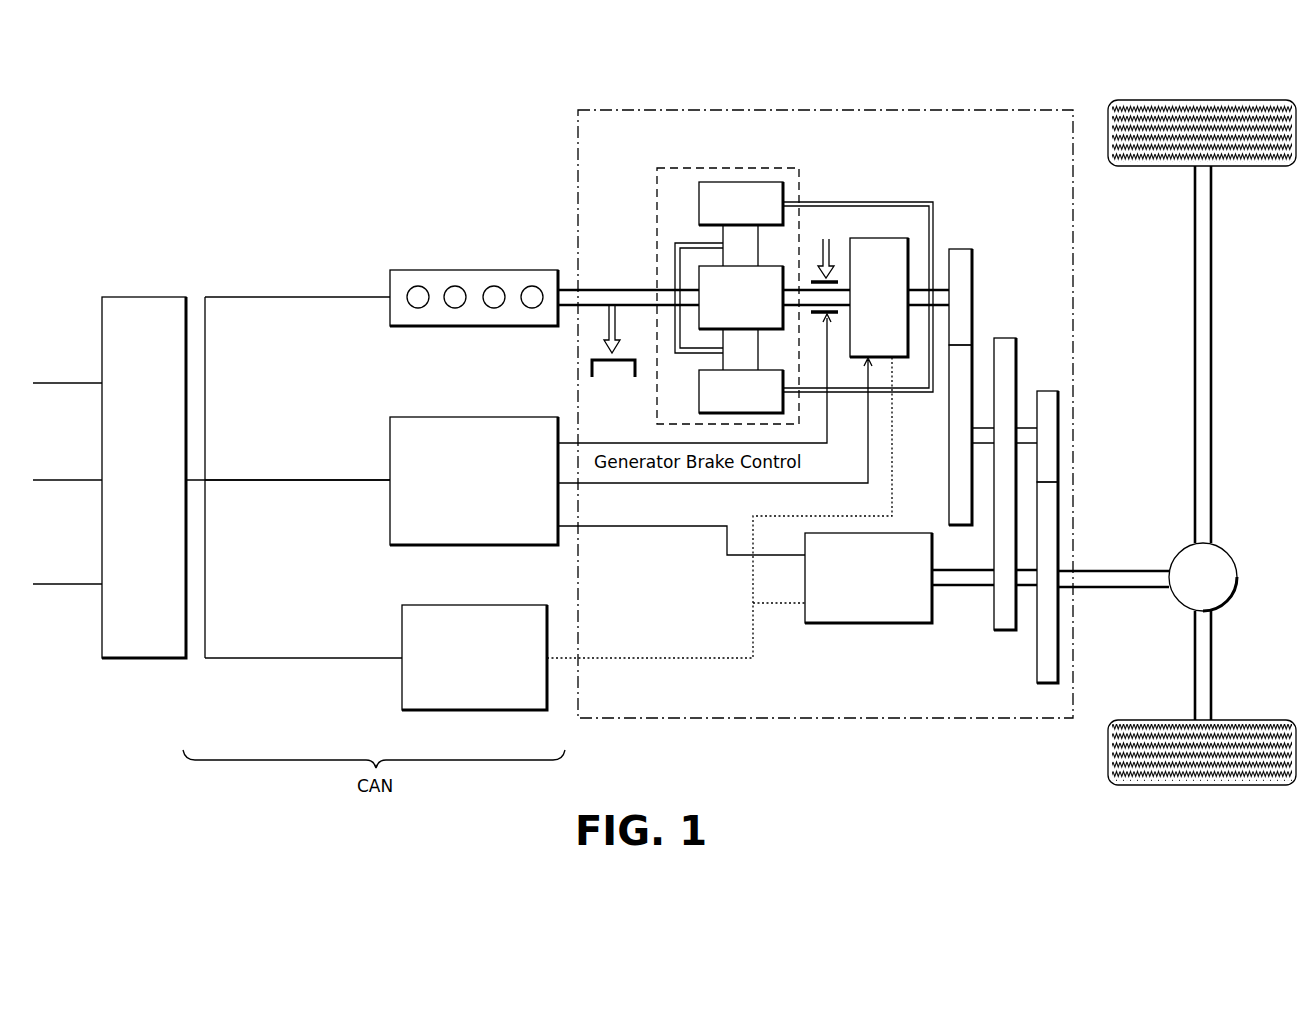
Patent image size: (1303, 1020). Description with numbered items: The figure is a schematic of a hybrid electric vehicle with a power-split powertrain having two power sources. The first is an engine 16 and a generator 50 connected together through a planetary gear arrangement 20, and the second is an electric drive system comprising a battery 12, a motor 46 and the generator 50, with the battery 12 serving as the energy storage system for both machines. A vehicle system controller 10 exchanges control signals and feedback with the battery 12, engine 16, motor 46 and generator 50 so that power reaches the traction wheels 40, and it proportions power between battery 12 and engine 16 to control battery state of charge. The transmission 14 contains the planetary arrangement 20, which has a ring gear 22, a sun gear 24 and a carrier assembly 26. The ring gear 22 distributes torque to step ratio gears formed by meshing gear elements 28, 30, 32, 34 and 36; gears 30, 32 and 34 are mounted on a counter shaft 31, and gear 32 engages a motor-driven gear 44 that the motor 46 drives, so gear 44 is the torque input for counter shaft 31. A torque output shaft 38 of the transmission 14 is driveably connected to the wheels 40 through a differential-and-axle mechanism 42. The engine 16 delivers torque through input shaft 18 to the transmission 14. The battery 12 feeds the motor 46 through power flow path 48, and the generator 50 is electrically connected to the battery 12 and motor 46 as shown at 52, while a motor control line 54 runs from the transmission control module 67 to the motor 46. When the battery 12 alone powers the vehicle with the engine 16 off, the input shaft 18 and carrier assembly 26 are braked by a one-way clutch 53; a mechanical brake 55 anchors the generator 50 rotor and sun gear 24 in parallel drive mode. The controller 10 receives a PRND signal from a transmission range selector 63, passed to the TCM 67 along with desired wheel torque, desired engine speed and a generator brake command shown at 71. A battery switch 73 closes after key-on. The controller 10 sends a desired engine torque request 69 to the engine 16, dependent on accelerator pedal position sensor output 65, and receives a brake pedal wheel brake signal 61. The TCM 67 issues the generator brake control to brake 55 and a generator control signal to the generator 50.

The vehicle system controller 10 is at (146, 297).
The battery 12 is at (465, 605).
The transmission 14 is at (836, 720).
The engine 16 is at (433, 270).
The input shaft 18 is at (570, 289).
The planetary gear arrangement 20 is at (799, 187).
The ring gear 22 is at (699, 195).
The sun gear 24 is at (699, 283).
The carrier assembly 26 is at (675, 250).
The gear element 28 is at (972, 280).
The gear element 30 is at (949, 513).
The counter shaft 31 is at (985, 428).
The gear element 32 is at (1016, 363).
The gear element 34 is at (1058, 410).
The gear element 36 is at (1058, 530).
The torque output shaft 38 is at (1100, 571).
The traction wheels 40 is at (1228, 100).
The differential-and-axle mechanism 42 is at (1237, 577).
The motor-driven gear 44 is at (1005, 630).
The motor 46 is at (853, 623).
The power flow path 48 is at (568, 658).
The generator 50 is at (908, 243).
The electrical connection 52 is at (800, 516).
The one-way clutch 53 is at (592, 370).
The motor control line 54 is at (770, 608).
The mechanical brake 55 is at (820, 278).
The wheel brake signal 61 is at (88, 585).
The transmission range selector 63 is at (88, 384).
The accelerator pedal position sensor output 65 is at (88, 481).
The transmission control module 67 is at (498, 417).
The desired engine torque request 69 is at (333, 298).
The desired wheel torque, desired engine speed and generator brake command 71 is at (333, 481).
The battery switch 73 is at (333, 659).